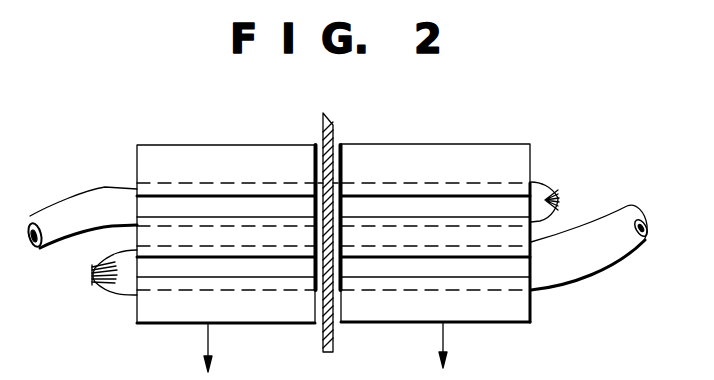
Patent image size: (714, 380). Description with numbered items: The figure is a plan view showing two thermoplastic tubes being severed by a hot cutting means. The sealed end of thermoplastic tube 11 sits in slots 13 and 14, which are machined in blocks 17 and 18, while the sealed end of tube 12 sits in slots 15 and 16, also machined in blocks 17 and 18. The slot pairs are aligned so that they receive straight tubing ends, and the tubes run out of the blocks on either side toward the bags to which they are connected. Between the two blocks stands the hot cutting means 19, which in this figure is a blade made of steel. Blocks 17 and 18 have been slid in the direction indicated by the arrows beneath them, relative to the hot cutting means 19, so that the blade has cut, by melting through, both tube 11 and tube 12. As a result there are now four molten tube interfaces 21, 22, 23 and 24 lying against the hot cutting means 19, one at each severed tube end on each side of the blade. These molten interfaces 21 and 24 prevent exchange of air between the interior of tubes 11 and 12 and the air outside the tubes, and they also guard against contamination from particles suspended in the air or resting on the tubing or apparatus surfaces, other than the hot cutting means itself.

The thermoplastic tube 11 is at (86, 200).
The tube 12 is at (578, 231).
The slot 13 is at (157, 205).
The slot 14 is at (513, 193).
The slot 15 is at (163, 278).
The slot 16 is at (502, 268).
The block 17 is at (210, 144).
The block 18 is at (472, 142).
The hot cutting means 19 is at (333, 130).
The molten tube interface 21 is at (320, 183).
The molten tube interface 22 is at (334, 179).
The molten tube interface 23 is at (317, 306).
The molten tube interface 24 is at (341, 300).